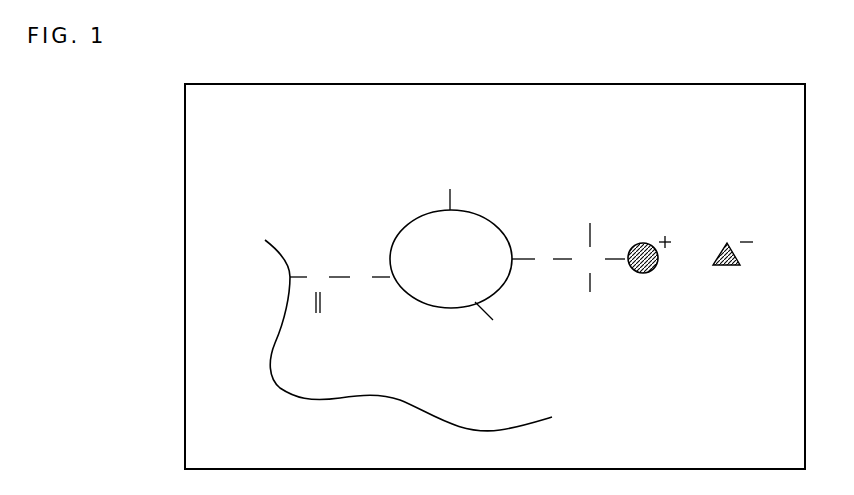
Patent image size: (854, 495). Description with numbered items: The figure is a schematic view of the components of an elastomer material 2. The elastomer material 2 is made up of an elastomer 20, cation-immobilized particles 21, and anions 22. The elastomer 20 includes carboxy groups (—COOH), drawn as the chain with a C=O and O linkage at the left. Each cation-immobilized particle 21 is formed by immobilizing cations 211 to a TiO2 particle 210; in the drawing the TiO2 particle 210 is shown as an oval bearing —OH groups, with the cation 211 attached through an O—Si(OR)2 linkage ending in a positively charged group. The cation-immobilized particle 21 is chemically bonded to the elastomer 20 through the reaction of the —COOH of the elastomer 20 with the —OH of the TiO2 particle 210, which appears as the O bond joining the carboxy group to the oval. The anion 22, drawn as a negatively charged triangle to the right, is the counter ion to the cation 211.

The elastomer material 2 is at (715, 84).
The elastomer 20 is at (280, 388).
The cation-immobilized particle 21 is at (506, 257).
The TiO2 particle 210 is at (402, 227).
The cation 211 is at (620, 335).
The anion 22 is at (727, 282).